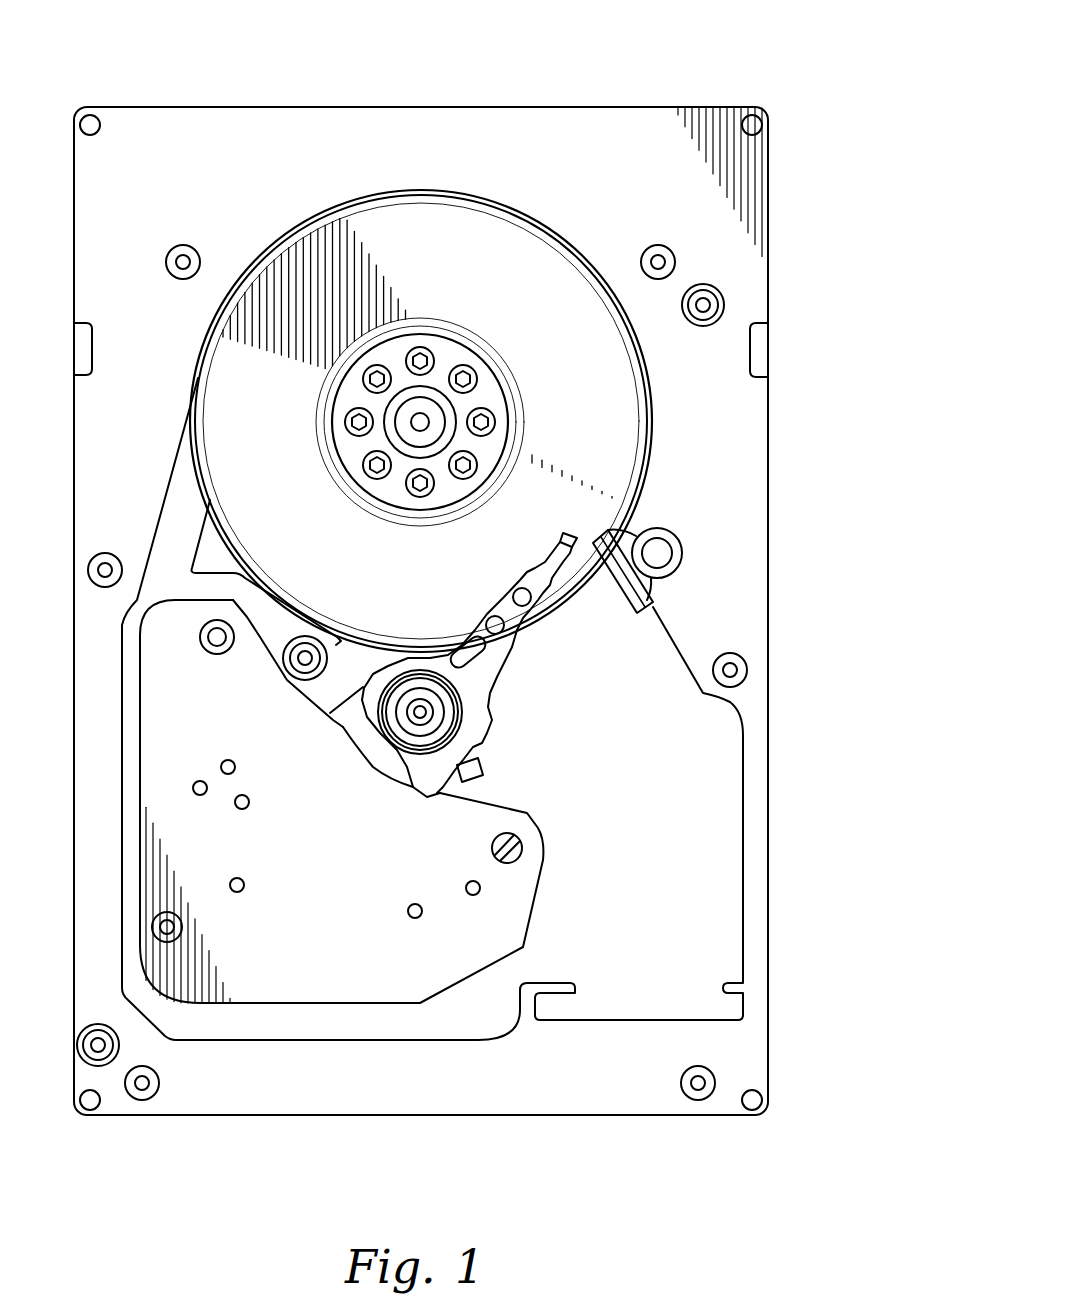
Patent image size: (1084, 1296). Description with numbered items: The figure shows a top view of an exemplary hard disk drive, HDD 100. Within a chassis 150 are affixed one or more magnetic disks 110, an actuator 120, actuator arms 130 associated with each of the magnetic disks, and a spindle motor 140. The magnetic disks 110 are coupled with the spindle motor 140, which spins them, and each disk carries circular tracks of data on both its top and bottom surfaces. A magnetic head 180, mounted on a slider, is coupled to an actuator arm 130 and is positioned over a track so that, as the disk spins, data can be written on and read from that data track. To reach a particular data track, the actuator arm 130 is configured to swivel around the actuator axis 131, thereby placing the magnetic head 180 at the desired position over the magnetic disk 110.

The HDD 100 is at (668, 36).
The magnetic disk 110 is at (510, 248).
The actuator 120 is at (520, 907).
The actuator arm 130 is at (503, 607).
The actuator axis 131 is at (430, 717).
The spindle motor 140 is at (437, 420).
The chassis 150 is at (188, 107).
The magnetic head 180 is at (570, 533).